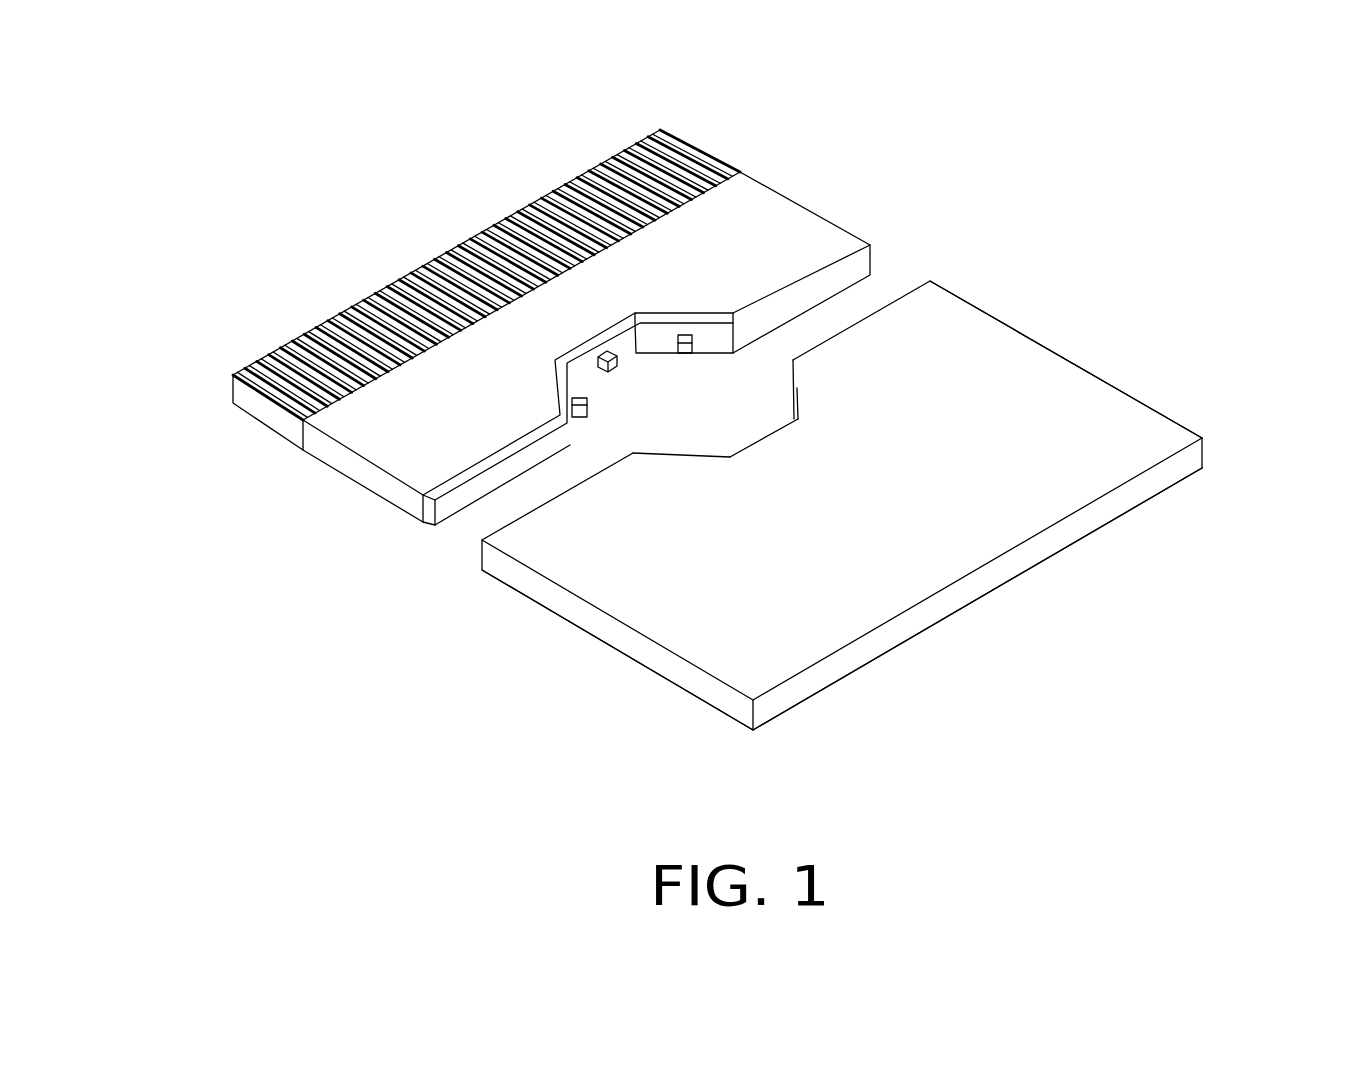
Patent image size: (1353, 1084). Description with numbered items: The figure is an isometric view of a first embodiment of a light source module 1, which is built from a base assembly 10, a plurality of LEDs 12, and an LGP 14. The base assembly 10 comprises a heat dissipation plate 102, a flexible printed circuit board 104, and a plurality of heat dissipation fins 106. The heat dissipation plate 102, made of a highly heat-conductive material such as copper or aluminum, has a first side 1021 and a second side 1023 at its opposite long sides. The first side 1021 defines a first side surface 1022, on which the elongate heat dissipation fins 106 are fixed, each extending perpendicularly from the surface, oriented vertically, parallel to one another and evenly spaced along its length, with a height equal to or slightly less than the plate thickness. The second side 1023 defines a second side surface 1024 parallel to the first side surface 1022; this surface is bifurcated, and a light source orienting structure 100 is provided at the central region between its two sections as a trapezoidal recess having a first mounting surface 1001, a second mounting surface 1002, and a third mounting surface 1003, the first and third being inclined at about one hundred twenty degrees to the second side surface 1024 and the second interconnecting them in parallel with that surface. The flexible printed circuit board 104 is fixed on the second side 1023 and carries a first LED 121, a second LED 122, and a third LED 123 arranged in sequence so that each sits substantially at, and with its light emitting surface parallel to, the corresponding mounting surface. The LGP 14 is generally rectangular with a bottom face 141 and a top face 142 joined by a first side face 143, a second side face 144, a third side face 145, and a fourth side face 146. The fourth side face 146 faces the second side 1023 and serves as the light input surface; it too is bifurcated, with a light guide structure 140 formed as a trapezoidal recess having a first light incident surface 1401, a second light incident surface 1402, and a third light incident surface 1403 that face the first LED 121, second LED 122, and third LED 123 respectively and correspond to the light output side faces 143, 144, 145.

The light source module 1 is at (302, 150).
The base assembly 10 is at (826, 86).
The light source orienting structure 100 is at (710, 303).
The first mounting surface 1001 is at (420, 275).
The second mounting surface 1002 is at (598, 324).
The third mounting surface 1003 is at (677, 313).
The heat dissipation plate 102 is at (765, 217).
The flexible printed circuit board 104 is at (837, 280).
The heat dissipation fins 106 is at (698, 152).
The first side 1021 is at (383, 407).
The first side surface 1022 is at (300, 434).
The second side 1023 is at (437, 468).
The second side surface 1024 is at (423, 512).
The LEDs 12 is at (545, 704).
The first LED 121 is at (573, 417).
The second LED 122 is at (609, 372).
The third LED 123 is at (685, 355).
The LGP 14 is at (1219, 447).
The light guide structure 140 is at (967, 300).
The first light incident surface 1401 is at (807, 382).
The second light incident surface 1402 is at (770, 440).
The third light incident surface 1403 is at (685, 463).
The bottom face 141 is at (1047, 565).
The top face 142 is at (1063, 400).
The first side face 143 is at (1168, 412).
The second side face 144 is at (1160, 485).
The third side face 145 is at (712, 690).
The fourth side face 146 is at (503, 527).